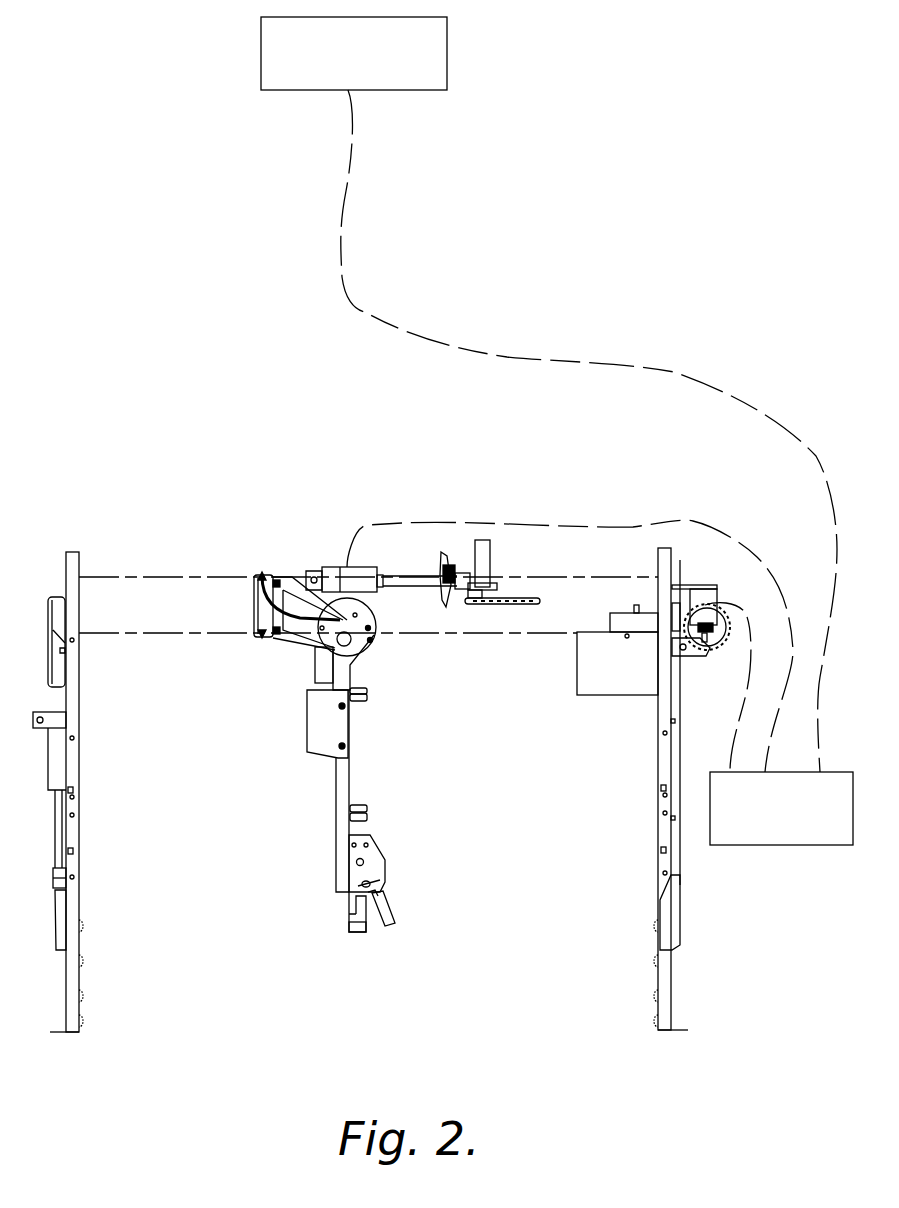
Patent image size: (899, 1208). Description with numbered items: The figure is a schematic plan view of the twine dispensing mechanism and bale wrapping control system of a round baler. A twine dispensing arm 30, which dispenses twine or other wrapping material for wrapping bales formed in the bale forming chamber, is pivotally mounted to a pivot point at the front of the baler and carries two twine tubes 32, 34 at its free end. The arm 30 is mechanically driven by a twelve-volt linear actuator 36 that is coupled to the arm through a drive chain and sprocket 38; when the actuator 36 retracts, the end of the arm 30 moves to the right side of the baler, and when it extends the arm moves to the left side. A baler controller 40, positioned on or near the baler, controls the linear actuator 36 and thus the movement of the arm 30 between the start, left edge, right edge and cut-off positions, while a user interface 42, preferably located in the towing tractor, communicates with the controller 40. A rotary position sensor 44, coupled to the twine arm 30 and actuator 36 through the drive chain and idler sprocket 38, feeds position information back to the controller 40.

The twine dispensing arm 30 is at (327, 812).
The twine tube 32 is at (350, 930).
The twine tube 34 is at (398, 925).
The linear actuator 36 is at (364, 567).
The drive chain and sprocket 38 is at (513, 606).
The baler controller 40 is at (776, 845).
The user interface 42 is at (435, 60).
The rotary position sensor 44 is at (703, 623).